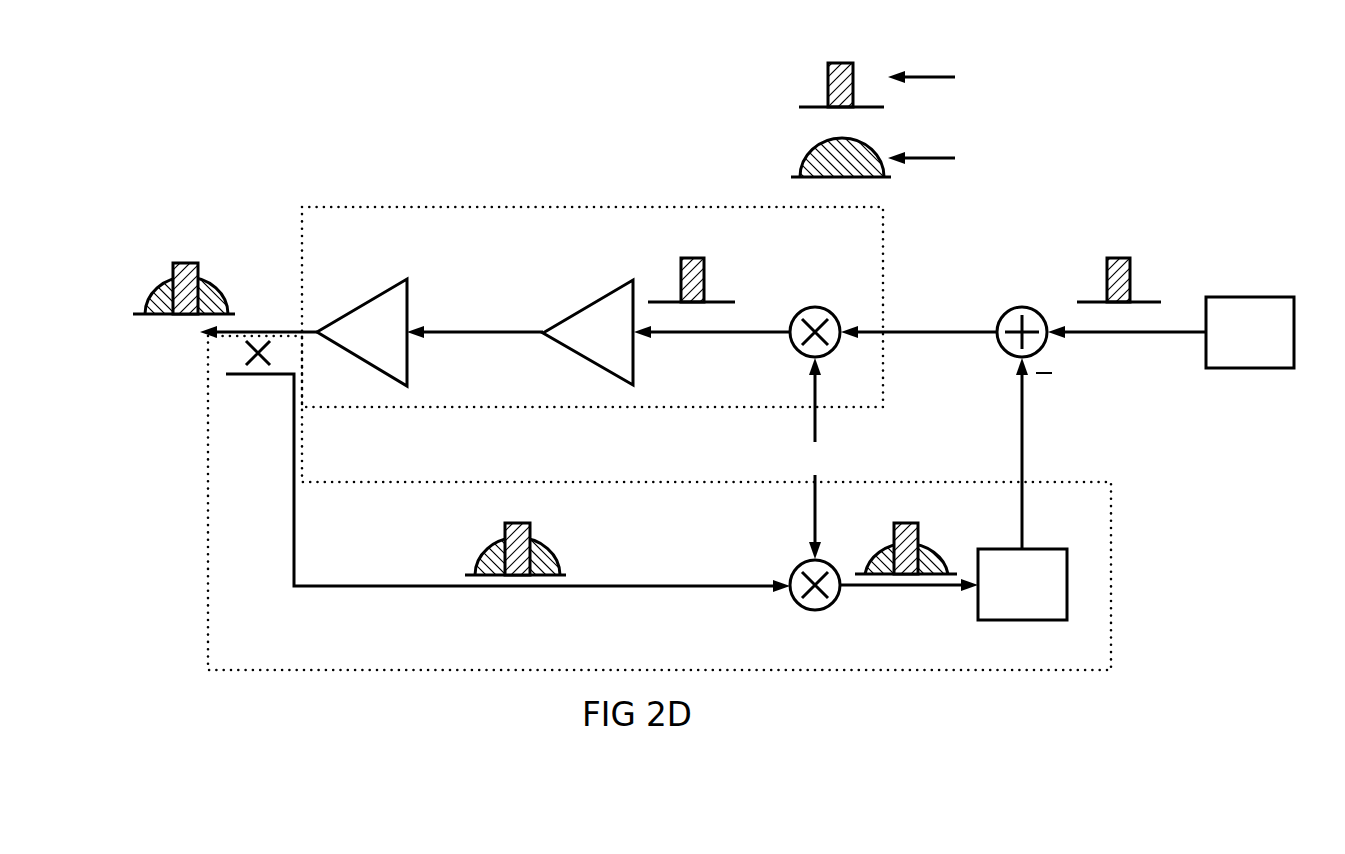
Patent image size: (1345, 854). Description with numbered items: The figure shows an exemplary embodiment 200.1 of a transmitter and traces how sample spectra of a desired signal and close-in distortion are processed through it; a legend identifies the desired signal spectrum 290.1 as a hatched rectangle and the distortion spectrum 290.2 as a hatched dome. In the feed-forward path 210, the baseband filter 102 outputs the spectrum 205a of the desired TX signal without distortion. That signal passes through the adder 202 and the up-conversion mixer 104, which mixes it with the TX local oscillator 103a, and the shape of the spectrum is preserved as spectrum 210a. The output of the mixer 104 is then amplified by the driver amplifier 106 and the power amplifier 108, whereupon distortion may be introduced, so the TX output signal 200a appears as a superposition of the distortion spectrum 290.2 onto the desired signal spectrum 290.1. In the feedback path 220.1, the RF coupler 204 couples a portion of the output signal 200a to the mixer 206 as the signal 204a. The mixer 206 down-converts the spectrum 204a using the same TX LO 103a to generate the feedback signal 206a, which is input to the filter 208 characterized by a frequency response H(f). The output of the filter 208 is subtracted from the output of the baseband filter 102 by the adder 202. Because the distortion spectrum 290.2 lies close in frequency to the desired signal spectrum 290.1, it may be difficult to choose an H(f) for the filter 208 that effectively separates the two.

The baseband filter 102 is at (1243, 296).
The TX local oscillator 103a is at (817, 437).
The mixer 104 is at (808, 307).
The driver amplifier 106 is at (601, 297).
The power amplifier 108 is at (372, 298).
The exemplary embodiment of the transmitter 200.1 is at (1222, 162).
The TX output signal 200a is at (186, 262).
The adder 202 is at (1013, 308).
The RF coupler 204 is at (262, 377).
The coupled signal 204a is at (517, 522).
The spectrum at the output of the baseband filter 205a is at (1118, 258).
The mixer 206 is at (820, 611).
The feedback signal 206a is at (905, 522).
The filter 208 is at (1043, 548).
The feed-forward path 210 is at (537, 206).
The spectrum following the adder and mixer 210a is at (690, 258).
The feedback path 220.1 is at (645, 481).
The desired signal spectrum 290.1 is at (1022, 65).
The distortion spectrum 290.2 is at (1010, 148).